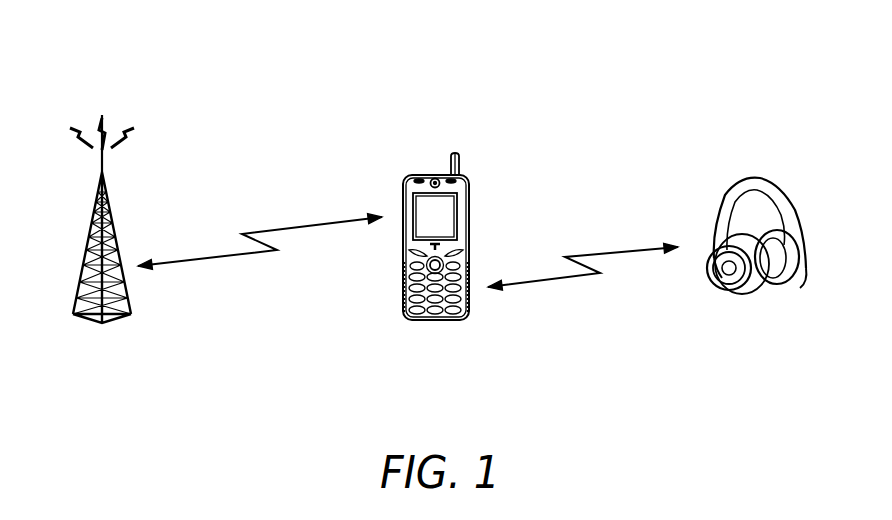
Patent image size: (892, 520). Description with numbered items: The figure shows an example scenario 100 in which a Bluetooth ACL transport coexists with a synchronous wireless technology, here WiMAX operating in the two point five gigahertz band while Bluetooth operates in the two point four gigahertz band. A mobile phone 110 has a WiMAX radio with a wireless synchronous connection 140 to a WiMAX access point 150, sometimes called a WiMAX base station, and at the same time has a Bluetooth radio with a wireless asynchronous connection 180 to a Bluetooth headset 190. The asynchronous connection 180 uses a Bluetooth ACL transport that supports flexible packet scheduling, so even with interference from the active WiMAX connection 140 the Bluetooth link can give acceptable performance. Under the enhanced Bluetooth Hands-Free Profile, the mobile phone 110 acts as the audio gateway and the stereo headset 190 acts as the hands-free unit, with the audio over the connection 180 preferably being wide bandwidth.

The scenario 100 is at (55, 45).
The mobile phone 110 is at (437, 175).
The wireless synchronous connection 140 is at (206, 258).
The WiMAX access point 150 is at (86, 247).
The wireless asynchronous connection 180 is at (640, 253).
The Bluetooth headset 190 is at (771, 177).